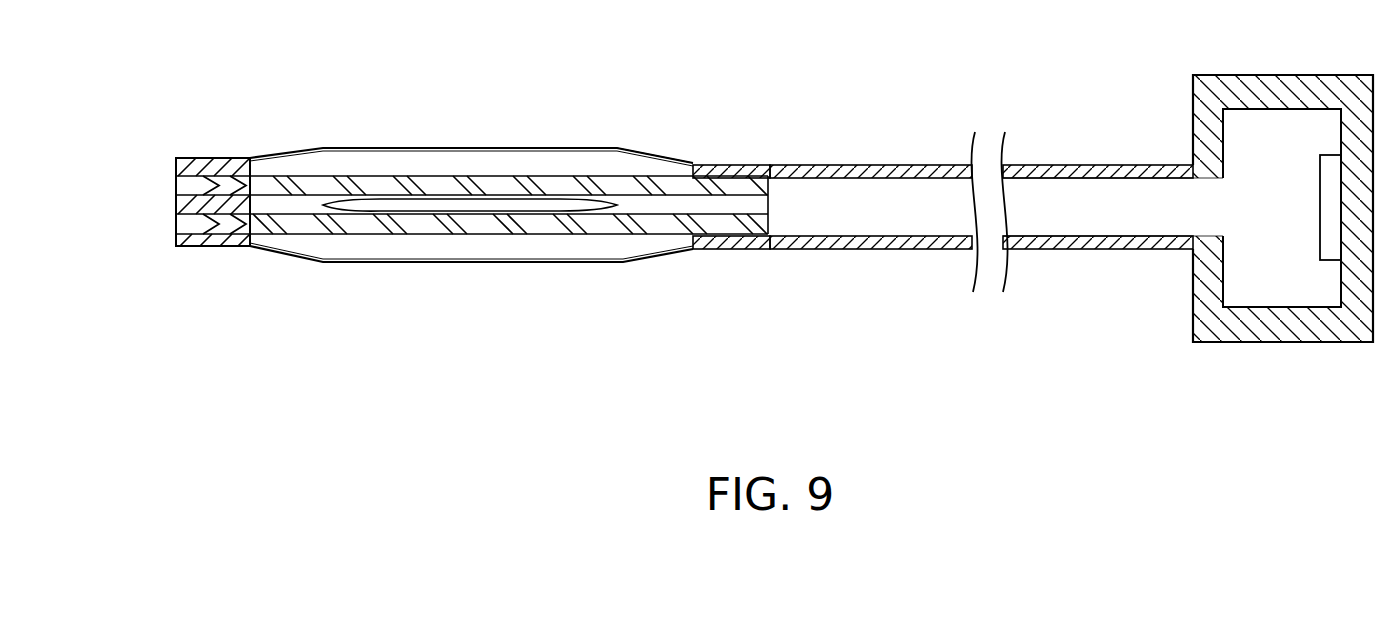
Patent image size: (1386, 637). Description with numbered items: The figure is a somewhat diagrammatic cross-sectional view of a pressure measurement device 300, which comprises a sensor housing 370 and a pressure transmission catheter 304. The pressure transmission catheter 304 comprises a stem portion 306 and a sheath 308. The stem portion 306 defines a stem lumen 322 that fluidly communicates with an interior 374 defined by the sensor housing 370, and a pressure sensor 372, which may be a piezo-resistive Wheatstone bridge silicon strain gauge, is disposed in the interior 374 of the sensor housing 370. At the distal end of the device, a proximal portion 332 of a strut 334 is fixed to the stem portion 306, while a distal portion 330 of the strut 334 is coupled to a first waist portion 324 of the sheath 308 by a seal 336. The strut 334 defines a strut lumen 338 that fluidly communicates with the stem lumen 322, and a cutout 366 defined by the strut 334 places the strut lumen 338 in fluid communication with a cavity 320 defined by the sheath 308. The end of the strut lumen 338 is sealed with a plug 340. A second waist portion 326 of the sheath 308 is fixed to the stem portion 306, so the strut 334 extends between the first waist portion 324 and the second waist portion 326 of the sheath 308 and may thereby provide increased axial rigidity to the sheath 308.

The pressure measurement device 300 is at (742, 237).
The pressure transmission catheter 304 is at (667, 234).
The stem portion 306 is at (957, 203).
The sheath 308 is at (456, 270).
The cavity 320 is at (475, 163).
The stem lumen 322 is at (1097, 204).
The first waist portion 324 is at (180, 210).
The second waist portion 326 is at (730, 162).
The distal portion 330 is at (200, 168).
The proximal portion 332 is at (727, 248).
The strut 334 is at (648, 172).
The seal 336 is at (177, 238).
The strut lumen 338 is at (300, 204).
The plug 340 is at (177, 197).
The cutout 366 is at (592, 205).
The sensor housing 370 is at (1283, 221).
The pressure sensor 372 is at (1320, 204).
The interior 374 is at (1297, 138).